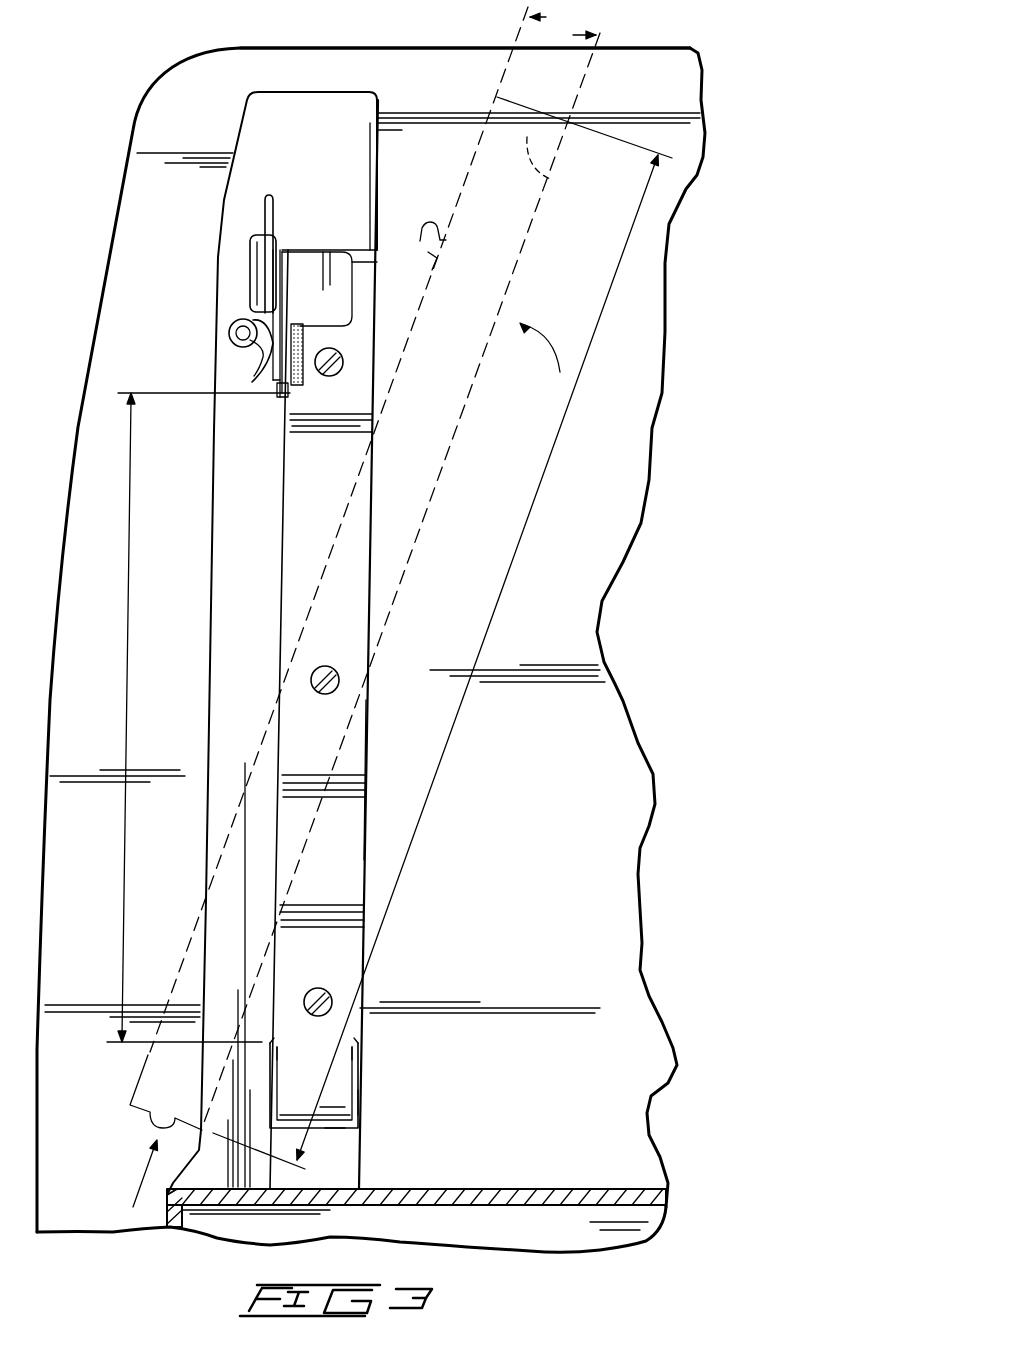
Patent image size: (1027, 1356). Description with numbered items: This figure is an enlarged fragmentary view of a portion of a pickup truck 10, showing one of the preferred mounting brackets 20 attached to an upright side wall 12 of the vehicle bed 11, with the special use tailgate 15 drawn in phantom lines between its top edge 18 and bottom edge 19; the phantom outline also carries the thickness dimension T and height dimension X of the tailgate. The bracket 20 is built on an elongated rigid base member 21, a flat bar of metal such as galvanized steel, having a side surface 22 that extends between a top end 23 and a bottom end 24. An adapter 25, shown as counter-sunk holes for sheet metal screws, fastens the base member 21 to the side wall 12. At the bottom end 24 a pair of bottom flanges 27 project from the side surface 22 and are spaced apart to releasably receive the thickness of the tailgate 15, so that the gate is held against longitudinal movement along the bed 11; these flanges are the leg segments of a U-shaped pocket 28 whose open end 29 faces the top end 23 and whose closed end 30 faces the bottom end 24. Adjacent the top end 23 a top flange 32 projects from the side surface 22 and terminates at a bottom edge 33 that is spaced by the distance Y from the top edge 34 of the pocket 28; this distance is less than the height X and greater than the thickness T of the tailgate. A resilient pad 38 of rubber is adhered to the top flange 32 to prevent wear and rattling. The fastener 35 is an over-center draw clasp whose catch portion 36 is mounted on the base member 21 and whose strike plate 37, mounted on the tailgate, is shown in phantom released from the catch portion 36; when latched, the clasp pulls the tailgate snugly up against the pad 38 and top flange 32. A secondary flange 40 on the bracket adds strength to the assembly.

The pickup truck 10 is at (675, 20).
The bed 11 is at (565, 1190).
The side wall 12 is at (582, 848).
The tailgate 15 is at (414, 465).
The top edge 18 is at (555, 181).
The bottom edge 19 is at (150, 1117).
The bracket 20 is at (378, 722).
The base member 21 is at (340, 855).
The side surface 22 is at (313, 528).
The top end 23 is at (362, 263).
The bottom end 24 is at (333, 1107).
The adapter 25 is at (342, 371).
The bottom flange 27 is at (275, 1085).
The U-shaped pocket 28 is at (370, 1103).
The open end 29 is at (363, 1037).
The closed end 30 is at (333, 1133).
The top flange 32 is at (293, 390).
The bottom edge 33 is at (282, 397).
The top edge 34 is at (270, 1043).
The fastener 35 is at (228, 283).
The catch portion 36 is at (272, 212).
The strike plate 37 is at (415, 237).
The resilient pad 38 is at (303, 340).
The secondary flange 40 is at (309, 287).